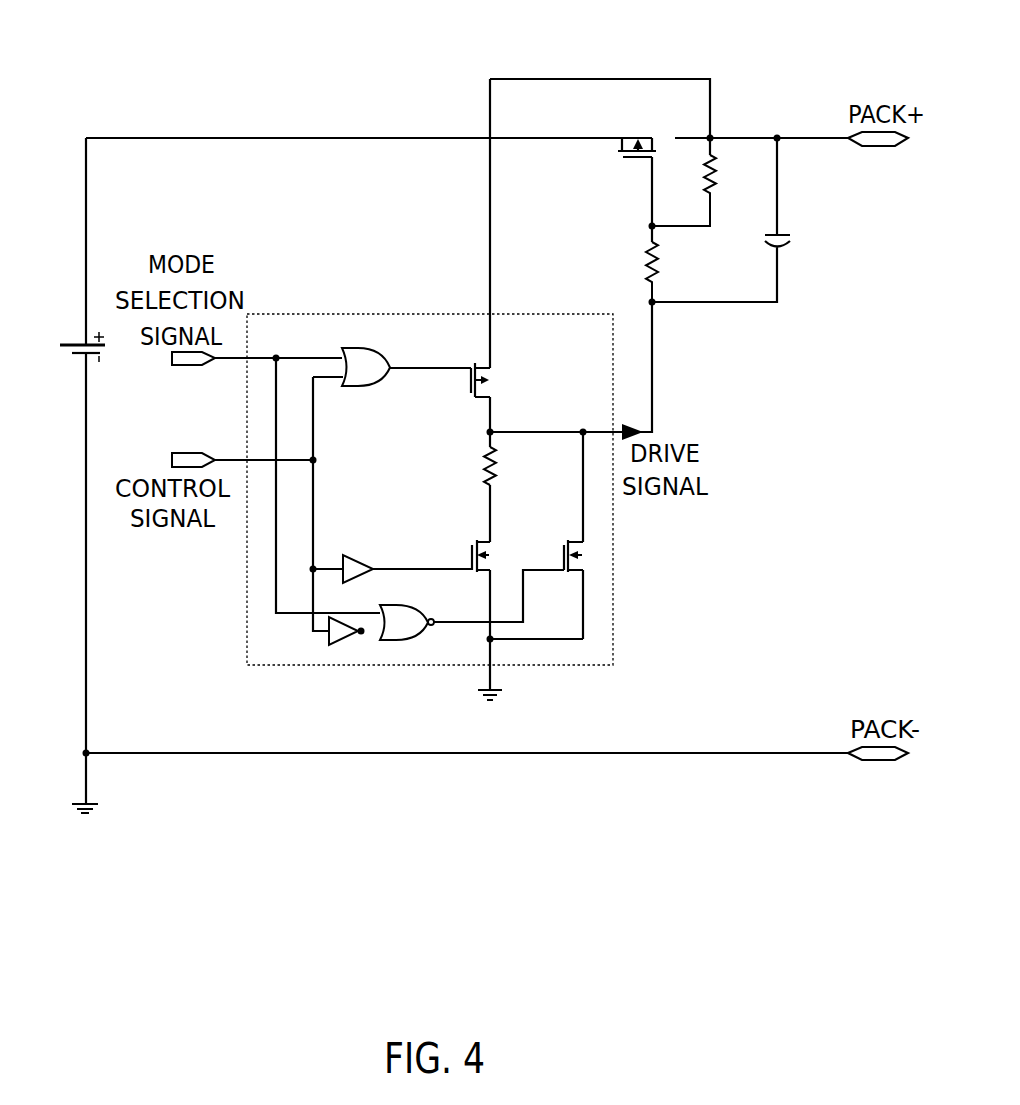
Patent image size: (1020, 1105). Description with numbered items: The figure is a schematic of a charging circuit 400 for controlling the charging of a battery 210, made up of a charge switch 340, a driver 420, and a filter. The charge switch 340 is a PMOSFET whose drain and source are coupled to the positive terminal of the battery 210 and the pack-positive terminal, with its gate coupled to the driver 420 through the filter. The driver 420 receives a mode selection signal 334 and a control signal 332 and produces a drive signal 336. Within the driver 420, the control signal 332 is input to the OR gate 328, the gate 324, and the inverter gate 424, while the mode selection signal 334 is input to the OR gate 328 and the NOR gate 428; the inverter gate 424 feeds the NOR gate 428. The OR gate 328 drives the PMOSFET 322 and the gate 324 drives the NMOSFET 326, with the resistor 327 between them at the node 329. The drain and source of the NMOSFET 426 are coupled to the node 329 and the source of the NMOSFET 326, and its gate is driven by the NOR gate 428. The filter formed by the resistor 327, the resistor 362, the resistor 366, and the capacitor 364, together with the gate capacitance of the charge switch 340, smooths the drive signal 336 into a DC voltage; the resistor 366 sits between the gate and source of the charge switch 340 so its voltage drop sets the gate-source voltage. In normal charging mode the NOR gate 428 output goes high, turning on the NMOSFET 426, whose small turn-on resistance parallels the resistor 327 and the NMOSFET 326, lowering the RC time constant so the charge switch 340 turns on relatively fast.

The charging circuit 400 is at (145, 86).
The battery 210 is at (75, 343).
The driver 420 is at (315, 313).
The mode selection signal 334 is at (189, 367).
The control signal 332 is at (188, 452).
The OR gate 328 is at (369, 350).
The PMOSFET 322 is at (497, 361).
The node 329 is at (492, 430).
The resistor 327 is at (484, 470).
The NMOSFET 326 is at (499, 537).
The gate 324 is at (362, 565).
The NOR gate 428 is at (423, 610).
The inverter gate 424 is at (340, 643).
The NMOSFET 426 is at (559, 588).
The drive signal 336 is at (652, 395).
The charge switch 340 is at (620, 178).
The resistor 366 is at (712, 185).
The capacitor 364 is at (773, 235).
The resistor 362 is at (656, 265).